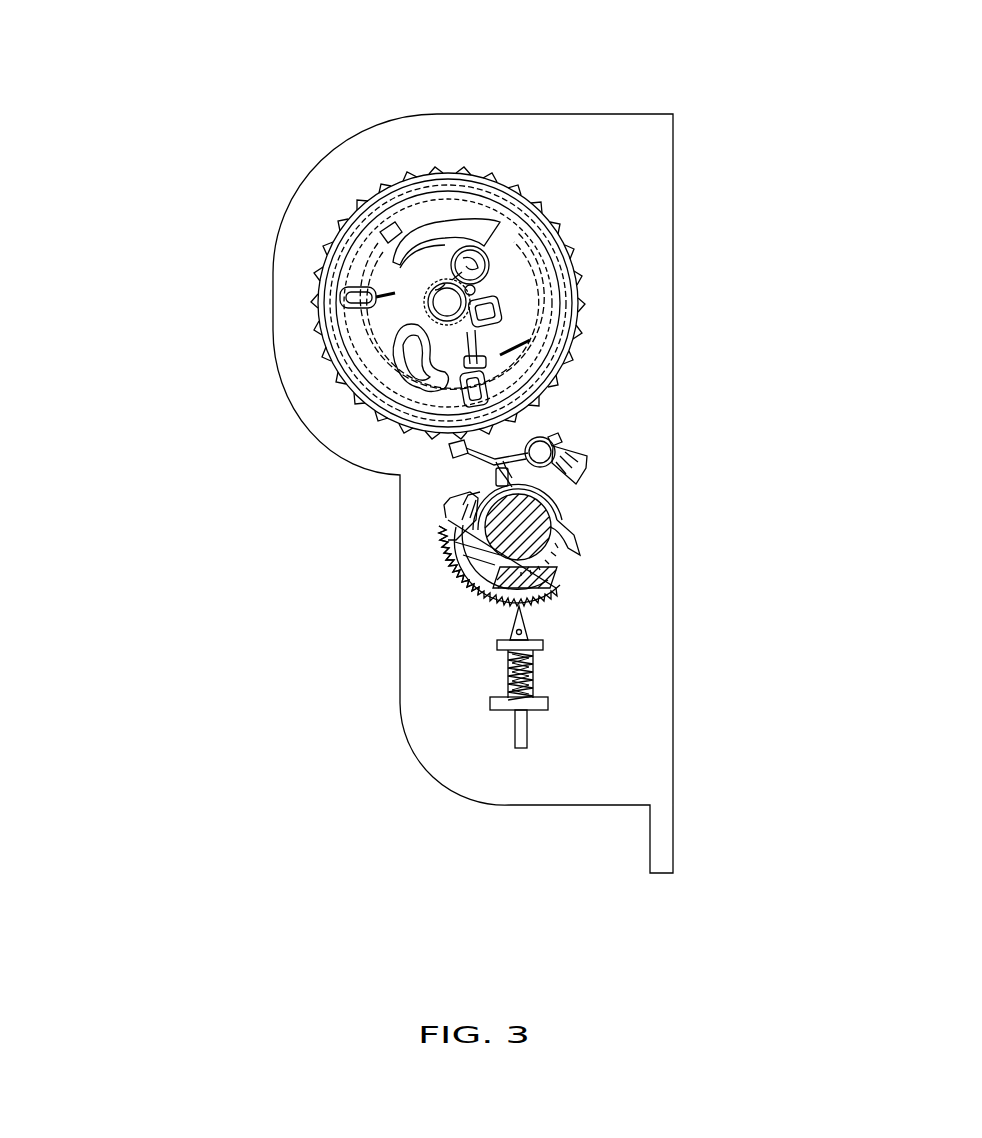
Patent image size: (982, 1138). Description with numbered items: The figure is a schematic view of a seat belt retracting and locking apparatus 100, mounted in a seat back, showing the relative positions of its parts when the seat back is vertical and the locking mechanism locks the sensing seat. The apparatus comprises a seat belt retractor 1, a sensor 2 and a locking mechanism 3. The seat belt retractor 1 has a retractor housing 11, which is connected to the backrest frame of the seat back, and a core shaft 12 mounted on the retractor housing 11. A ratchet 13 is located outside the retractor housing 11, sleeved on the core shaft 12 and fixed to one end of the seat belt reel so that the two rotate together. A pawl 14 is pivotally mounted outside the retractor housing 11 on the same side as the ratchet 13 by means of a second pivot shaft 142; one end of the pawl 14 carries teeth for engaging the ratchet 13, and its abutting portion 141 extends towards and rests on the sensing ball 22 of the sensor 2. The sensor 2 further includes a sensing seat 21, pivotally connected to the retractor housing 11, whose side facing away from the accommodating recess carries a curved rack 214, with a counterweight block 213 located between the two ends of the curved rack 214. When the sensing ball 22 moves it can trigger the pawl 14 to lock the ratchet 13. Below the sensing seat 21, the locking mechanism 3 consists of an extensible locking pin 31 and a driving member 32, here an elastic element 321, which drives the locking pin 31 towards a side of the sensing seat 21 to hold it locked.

The seat belt retracting and locking apparatus 100 is at (108, 107).
The seat belt retractor 1 is at (449, 92).
The retractor housing 11 is at (343, 180).
The core shaft 12 is at (447, 302).
The ratchet 13 is at (367, 325).
The pawl 14 is at (497, 445).
The abutting portion 141 is at (502, 477).
The second pivot shaft 142 is at (548, 450).
The sensor 2 is at (793, 445).
The sensing seat 21 is at (547, 573).
The sensing ball 22 is at (523, 518).
The counterweight block 213 is at (553, 585).
The curved rack 214 is at (445, 557).
The locking mechanism 3 is at (333, 643).
The locking pin 31 is at (510, 623).
The driving member 32 is at (492, 682).
The elastic element 321 is at (533, 672).